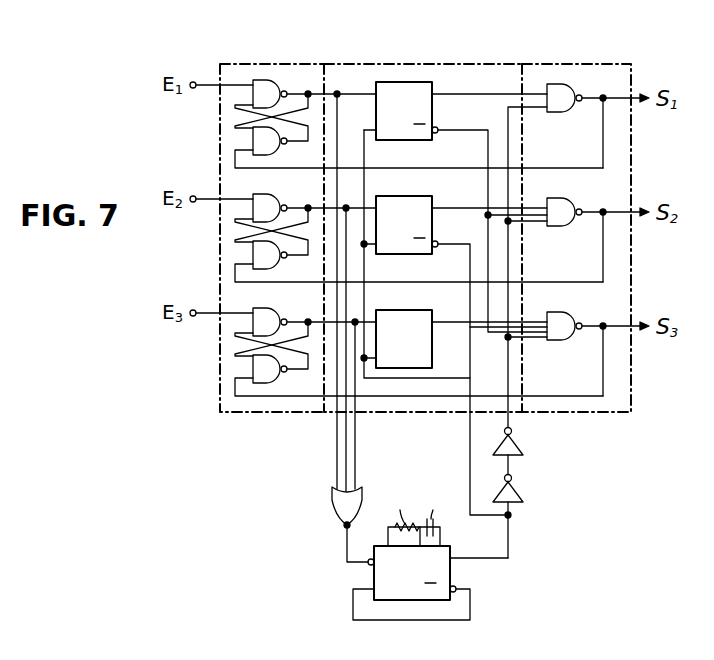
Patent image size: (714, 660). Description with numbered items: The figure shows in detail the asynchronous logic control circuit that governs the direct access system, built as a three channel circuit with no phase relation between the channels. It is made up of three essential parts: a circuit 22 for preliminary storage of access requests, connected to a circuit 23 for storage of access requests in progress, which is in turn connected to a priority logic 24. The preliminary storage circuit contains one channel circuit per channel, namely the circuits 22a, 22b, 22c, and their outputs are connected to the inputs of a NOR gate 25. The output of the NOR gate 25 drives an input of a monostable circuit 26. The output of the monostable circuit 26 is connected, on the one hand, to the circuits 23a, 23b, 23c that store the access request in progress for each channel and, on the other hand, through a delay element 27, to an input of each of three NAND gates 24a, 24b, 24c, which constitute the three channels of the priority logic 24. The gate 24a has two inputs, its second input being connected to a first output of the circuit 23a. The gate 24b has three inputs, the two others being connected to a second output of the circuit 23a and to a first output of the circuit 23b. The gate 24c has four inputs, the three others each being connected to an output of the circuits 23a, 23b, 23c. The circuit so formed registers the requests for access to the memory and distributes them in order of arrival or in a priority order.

The circuit for preliminary storage of access requests 22 is at (268, 66).
The preliminary storage circuit of the first channel 22a is at (419, 125).
The preliminary storage circuit of the second channel 22b is at (419, 239).
The preliminary storage circuit of the third channel 22c is at (419, 353).
The circuit for storage of access requests in progress 23 is at (473, 80).
The storage circuit of access requests in progress for the first channel 23a is at (403, 82).
The storage circuit of access requests in progress for the second channel 23b is at (400, 192).
The storage circuit of access requests in progress for the third channel 23c is at (402, 308).
The priority logic 24 is at (594, 78).
The NAND gate 24a is at (562, 112).
The NAND gate 24b is at (562, 226).
The NAND gate 24c is at (562, 340).
The NOR gate 25 is at (333, 498).
The monostable circuit 26 is at (419, 600).
The delay element 27 is at (520, 479).